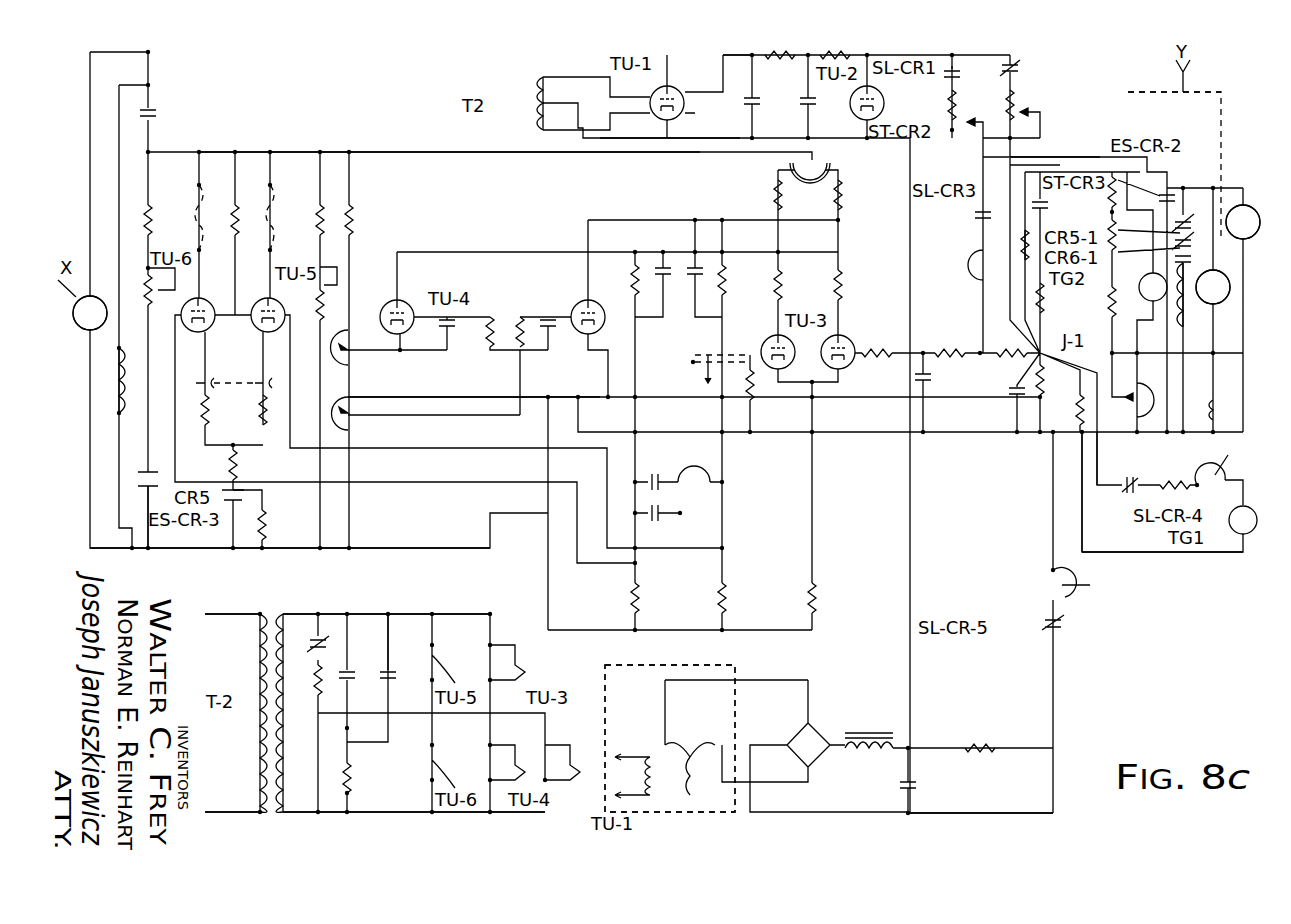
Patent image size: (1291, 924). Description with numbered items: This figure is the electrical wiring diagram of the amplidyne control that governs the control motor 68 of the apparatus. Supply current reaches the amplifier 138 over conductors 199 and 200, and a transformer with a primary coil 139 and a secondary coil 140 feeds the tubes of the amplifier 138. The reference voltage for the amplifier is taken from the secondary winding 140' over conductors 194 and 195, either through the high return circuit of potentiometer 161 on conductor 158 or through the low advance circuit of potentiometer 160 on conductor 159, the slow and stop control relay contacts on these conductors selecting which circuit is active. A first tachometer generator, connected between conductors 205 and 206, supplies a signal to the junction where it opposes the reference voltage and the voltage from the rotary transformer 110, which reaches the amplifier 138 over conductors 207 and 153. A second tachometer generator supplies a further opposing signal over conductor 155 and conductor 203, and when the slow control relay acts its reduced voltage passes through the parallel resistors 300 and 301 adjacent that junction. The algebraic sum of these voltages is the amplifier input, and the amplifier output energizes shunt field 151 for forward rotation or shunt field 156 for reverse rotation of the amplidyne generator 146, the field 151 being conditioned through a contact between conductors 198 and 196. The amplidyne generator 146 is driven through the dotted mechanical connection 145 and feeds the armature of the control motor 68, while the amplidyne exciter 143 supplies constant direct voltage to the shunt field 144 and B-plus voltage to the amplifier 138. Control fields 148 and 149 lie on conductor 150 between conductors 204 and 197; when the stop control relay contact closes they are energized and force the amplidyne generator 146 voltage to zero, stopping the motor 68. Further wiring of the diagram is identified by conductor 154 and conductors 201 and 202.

The conductor 196 is at (458, 152).
The conductor 194 is at (732, 57).
The conductor 195 is at (688, 138).
The secondary winding 140' is at (501, 92).
The amplidyne field 156 is at (197, 205).
The amplidyne field 151 is at (274, 208).
The conductor 159 is at (949, 69).
The potentiometer 161 is at (1016, 88).
The potentiometer 160 is at (950, 118).
The conductor 158 is at (1023, 146).
The connection 145 is at (1221, 102).
The conductor 203 is at (1101, 134).
The conductor 204 is at (1198, 214).
The control motor 68 is at (1241, 205).
The resistor 300 is at (1015, 238).
The resistor 301 is at (1040, 306).
The control field 148 is at (1190, 266).
The amplidyne generator 146 is at (1230, 287).
The control field 149 is at (1190, 327).
The conductor 155 is at (1158, 348).
The conductor 150 is at (1165, 450).
The conductor 205 is at (1097, 486).
The conductor 206 is at (1116, 553).
The amplidyne exciter 143 is at (88, 330).
The shunt field 144 is at (113, 390).
The conductor 154 is at (148, 533).
The conductor 198 is at (220, 550).
The conductor 197 is at (439, 397).
The conductor 199 is at (230, 606).
The secondary coil 140 is at (386, 596).
The conductor 201 is at (388, 614).
The conductor 200 is at (260, 808).
The primary coil 139 is at (268, 815).
The amplifier 138 is at (288, 813).
The conductor 202 is at (386, 820).
The conductor 207 is at (945, 748).
The conductor 153 is at (1042, 790).
The rotary transformer 110 is at (680, 812).